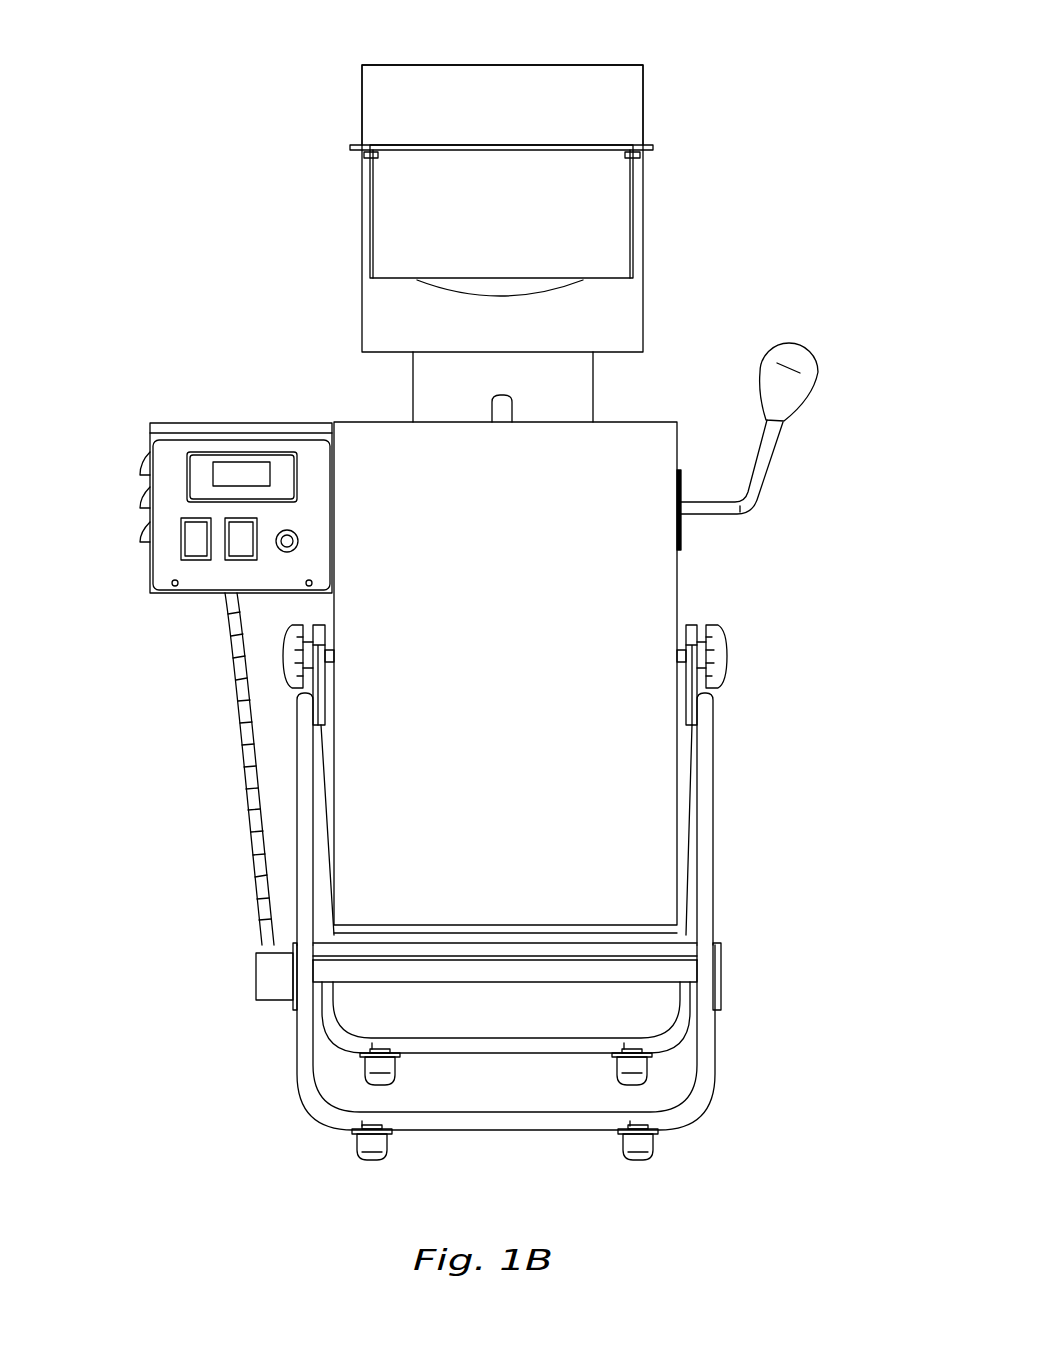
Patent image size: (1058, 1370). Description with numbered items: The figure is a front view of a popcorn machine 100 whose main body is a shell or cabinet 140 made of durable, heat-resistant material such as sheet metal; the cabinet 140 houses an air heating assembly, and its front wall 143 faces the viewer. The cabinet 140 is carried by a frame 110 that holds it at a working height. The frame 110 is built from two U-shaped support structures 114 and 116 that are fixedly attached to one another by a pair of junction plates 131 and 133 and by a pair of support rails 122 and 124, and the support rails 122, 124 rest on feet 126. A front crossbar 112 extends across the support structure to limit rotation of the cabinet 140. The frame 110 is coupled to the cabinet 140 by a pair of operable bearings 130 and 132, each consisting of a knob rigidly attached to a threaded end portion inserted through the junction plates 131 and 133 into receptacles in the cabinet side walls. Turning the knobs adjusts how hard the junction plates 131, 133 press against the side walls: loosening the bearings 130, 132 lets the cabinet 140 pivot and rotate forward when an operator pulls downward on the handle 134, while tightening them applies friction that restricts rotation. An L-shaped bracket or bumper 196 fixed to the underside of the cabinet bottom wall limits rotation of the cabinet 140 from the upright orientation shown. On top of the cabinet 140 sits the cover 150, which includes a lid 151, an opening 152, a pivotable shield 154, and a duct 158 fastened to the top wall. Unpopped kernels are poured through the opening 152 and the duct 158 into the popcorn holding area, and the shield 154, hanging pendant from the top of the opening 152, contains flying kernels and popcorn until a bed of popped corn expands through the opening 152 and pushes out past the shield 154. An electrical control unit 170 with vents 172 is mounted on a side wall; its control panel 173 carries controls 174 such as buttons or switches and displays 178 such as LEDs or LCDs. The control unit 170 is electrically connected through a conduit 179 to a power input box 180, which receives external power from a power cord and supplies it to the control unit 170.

The popcorn machine 100 is at (294, 97).
The frame 110 is at (727, 1110).
The front crossbar 112 is at (693, 948).
The U-shaped support structure 114 is at (711, 1043).
The U-shaped support structure 116 is at (476, 1046).
The support rail 122 is at (469, 1170).
The support rail 124 is at (620, 1135).
The feet 126 is at (375, 1147).
The operable bearing 130 is at (283, 657).
The junction plate 131 is at (321, 632).
The operable bearing 132 is at (727, 660).
The junction plate 133 is at (690, 632).
The handle 134 is at (780, 380).
The cabinet 140 is at (680, 712).
The front wall 143 is at (657, 790).
The cover 150 is at (700, 127).
The lid 151 is at (512, 93).
The opening 152 is at (458, 284).
The pivotable shield 154 is at (600, 192).
The duct 158 is at (560, 363).
The control unit 170 is at (228, 489).
The vents 172 is at (141, 500).
The control panel 173 is at (315, 510).
The controls 174 is at (194, 545).
The displays 178 is at (234, 470).
The conduit 179 is at (254, 812).
The power input box 180 is at (256, 968).
The L-shaped bracket 196 is at (692, 972).